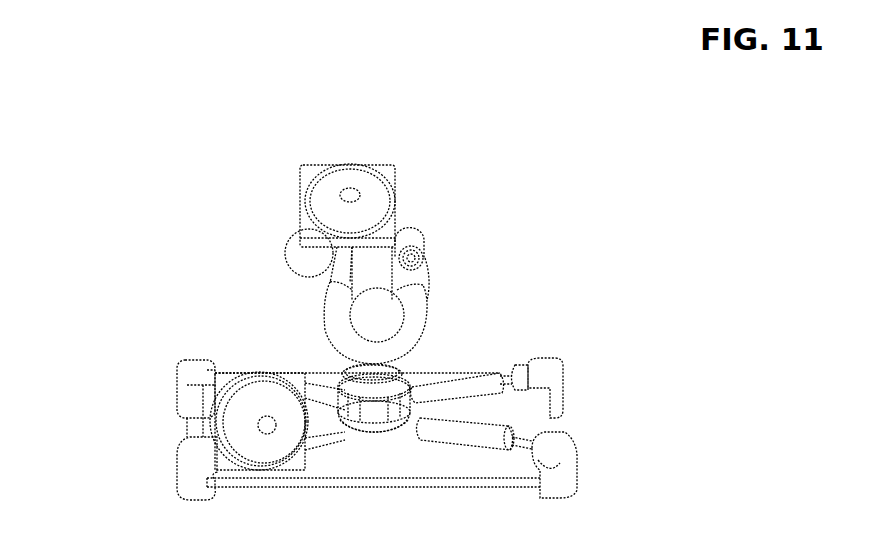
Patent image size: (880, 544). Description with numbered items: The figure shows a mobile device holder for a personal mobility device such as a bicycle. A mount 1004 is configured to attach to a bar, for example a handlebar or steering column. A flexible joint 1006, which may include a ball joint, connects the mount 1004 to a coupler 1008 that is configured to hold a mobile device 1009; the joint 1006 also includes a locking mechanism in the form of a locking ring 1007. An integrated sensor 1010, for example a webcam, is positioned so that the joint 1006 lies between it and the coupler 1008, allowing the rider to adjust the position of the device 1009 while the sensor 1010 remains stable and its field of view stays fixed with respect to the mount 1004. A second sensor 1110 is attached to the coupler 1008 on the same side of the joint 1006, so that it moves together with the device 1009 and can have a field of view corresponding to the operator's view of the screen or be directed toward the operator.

The mount 1004 is at (427, 320).
The flexible joint 1006 is at (363, 370).
The locking ring 1007 is at (407, 388).
The coupler 1008 is at (563, 458).
The mobile device 1009 is at (513, 410).
The sensor 1010 is at (355, 167).
The second sensor 1110 is at (227, 420).